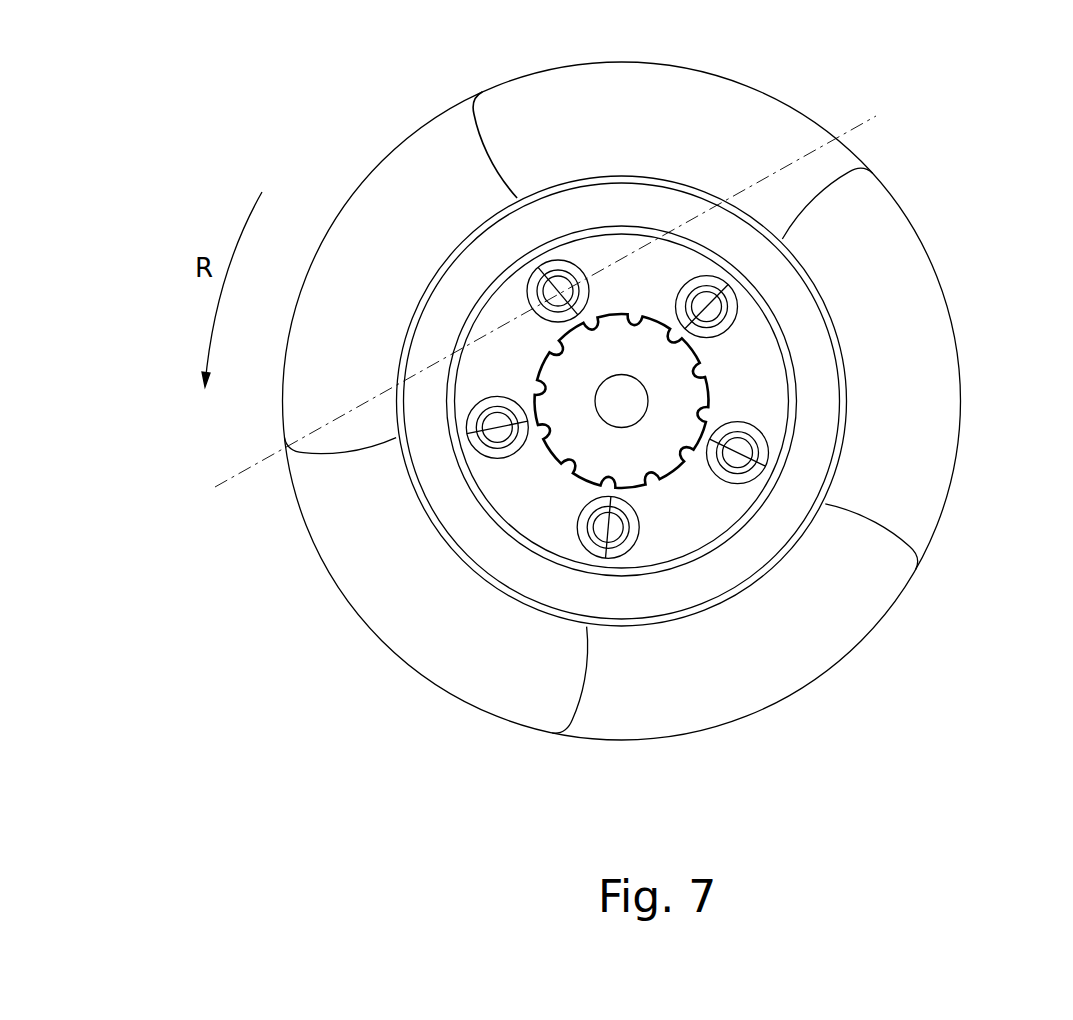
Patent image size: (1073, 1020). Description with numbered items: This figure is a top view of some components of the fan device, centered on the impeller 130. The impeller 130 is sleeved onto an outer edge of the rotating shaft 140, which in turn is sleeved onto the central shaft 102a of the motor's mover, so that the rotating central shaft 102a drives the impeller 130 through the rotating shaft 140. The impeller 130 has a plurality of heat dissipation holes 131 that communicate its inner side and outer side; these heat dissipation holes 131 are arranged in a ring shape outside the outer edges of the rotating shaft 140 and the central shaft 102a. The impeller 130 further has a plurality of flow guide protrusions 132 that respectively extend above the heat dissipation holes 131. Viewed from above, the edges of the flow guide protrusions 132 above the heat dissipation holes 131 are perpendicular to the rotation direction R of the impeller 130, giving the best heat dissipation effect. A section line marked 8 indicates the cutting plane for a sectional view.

The impeller 130 is at (825, 392).
The heat dissipation holes 131 is at (548, 285).
The flow guide protrusions 132 is at (560, 266).
The rotating shaft 140 is at (677, 441).
The central shaft 102a is at (630, 415).
The section line 8- 8 is at (876, 116).